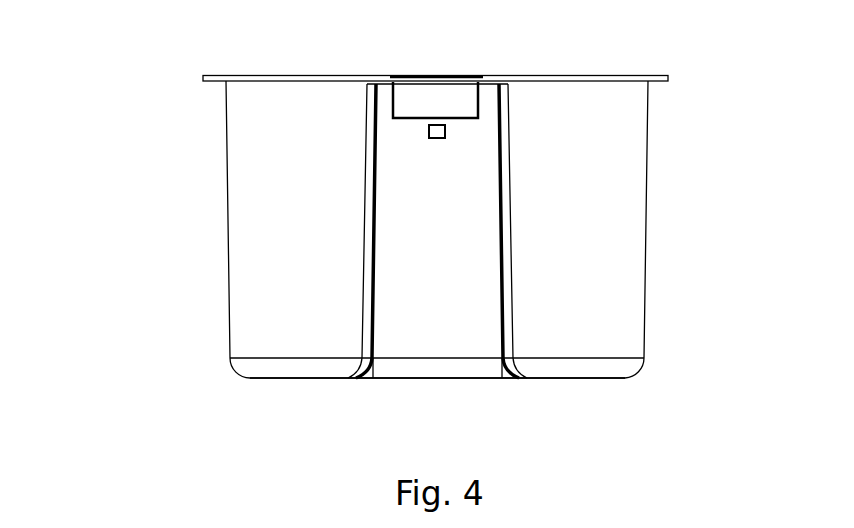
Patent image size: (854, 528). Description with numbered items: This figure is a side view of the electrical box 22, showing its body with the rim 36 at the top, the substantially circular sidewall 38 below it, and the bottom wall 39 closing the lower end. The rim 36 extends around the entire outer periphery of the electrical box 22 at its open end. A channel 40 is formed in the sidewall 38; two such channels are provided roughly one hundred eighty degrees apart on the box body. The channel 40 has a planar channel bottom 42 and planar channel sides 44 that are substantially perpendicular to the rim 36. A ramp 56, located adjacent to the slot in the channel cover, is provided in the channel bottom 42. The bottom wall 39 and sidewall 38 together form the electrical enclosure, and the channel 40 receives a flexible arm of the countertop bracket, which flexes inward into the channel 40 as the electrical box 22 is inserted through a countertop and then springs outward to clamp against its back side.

The electrical box 22 is at (108, 108).
The rim 36 is at (660, 83).
The sidewall 38 is at (310, 231).
The bottom wall 39 is at (560, 379).
The channel 40 is at (437, 333).
The channel bottom 42 is at (451, 289).
The channel side 44 is at (498, 235).
The ramp 56 is at (437, 139).